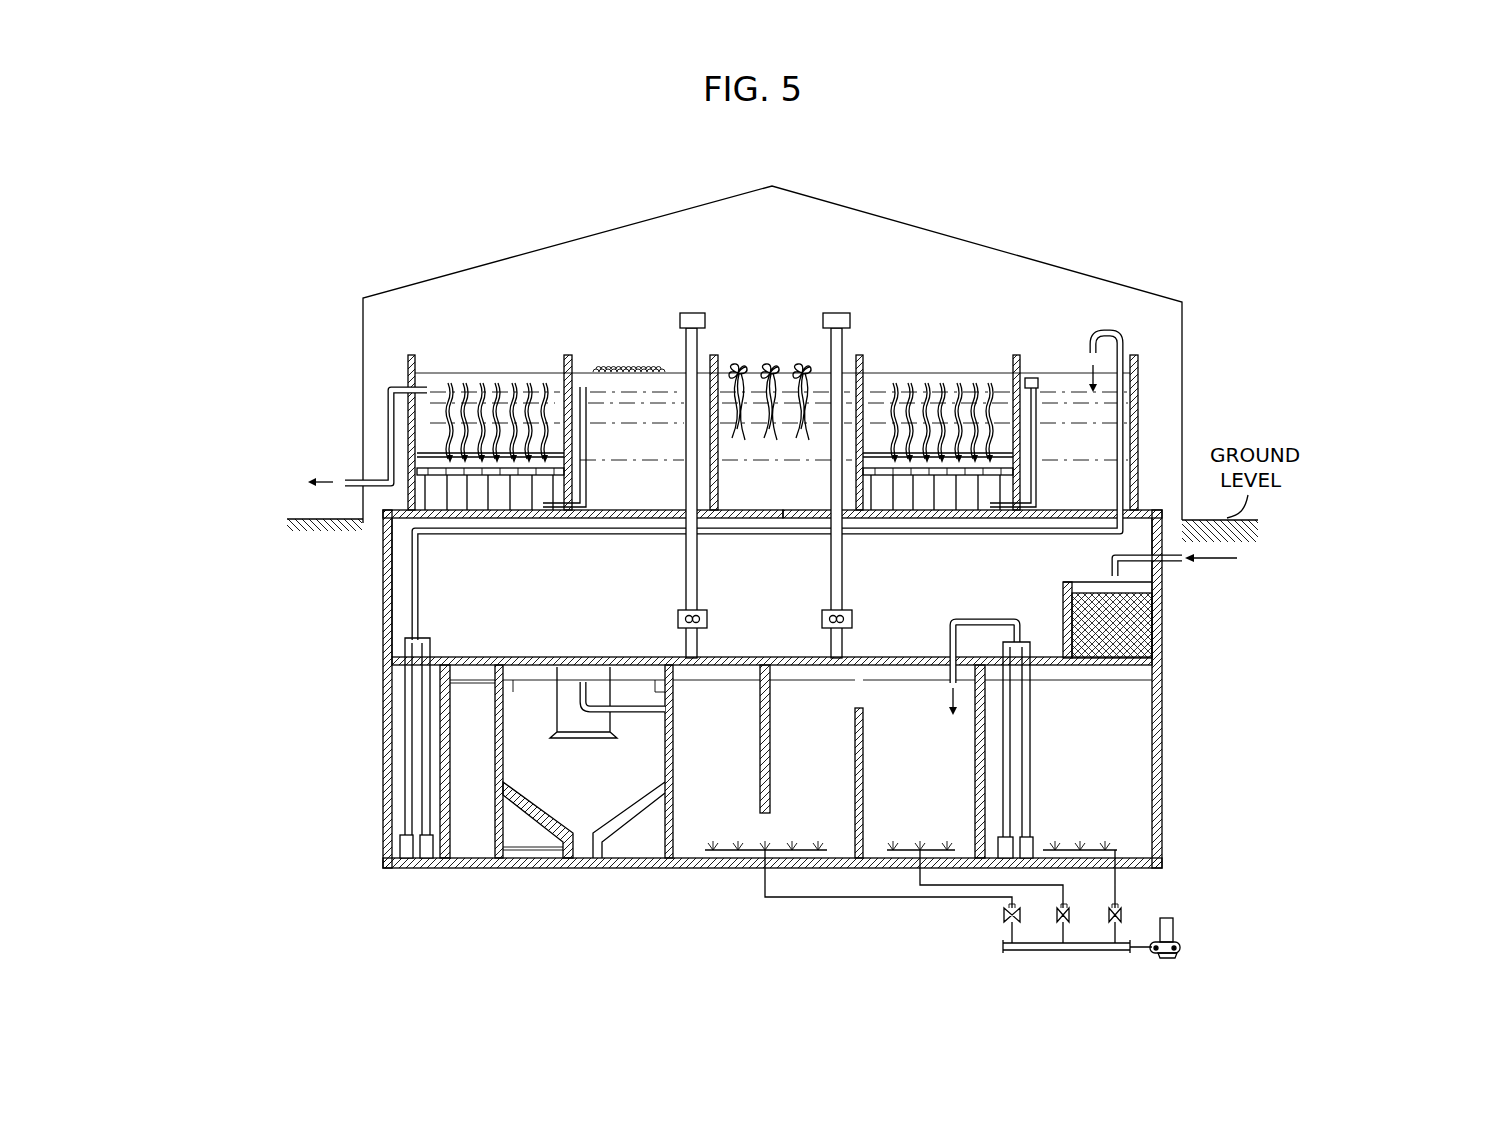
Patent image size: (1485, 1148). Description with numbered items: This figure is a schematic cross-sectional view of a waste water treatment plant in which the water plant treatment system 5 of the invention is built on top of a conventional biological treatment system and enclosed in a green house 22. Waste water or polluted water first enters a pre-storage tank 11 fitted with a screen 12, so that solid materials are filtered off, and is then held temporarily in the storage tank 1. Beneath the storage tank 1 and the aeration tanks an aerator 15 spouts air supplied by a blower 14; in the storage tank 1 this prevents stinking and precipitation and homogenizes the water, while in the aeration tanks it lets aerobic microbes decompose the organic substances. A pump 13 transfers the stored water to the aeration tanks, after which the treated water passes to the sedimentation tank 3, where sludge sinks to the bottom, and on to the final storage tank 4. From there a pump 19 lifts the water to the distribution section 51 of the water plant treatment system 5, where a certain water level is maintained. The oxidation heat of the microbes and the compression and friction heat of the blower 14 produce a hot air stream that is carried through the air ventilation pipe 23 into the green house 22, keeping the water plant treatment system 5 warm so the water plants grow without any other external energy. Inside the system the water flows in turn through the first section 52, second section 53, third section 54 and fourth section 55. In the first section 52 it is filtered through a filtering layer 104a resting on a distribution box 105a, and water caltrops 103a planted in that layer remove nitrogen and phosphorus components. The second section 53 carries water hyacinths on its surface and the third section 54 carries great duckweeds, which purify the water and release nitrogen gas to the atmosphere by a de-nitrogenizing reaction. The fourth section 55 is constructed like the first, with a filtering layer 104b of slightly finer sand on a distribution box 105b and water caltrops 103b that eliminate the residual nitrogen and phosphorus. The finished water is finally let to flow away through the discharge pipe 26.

The storage tank 1 is at (1143, 743).
The sedimentation tank 3 is at (598, 793).
The final storage tank 4 is at (443, 835).
The water plant treatment system 5 is at (773, 518).
The pre-storage tank 11 is at (1140, 585).
The screen 12 is at (1147, 638).
The pump 13 is at (1033, 847).
The blower 14 is at (1175, 933).
The aerator 15 is at (797, 846).
The pump 19 is at (402, 849).
The green house 22 is at (962, 238).
The air ventilation pipe 23 is at (833, 313).
The discharge pipe 26 is at (385, 418).
The distribution section 51 is at (1063, 383).
The first section 52 is at (918, 383).
The second section 53 is at (752, 378).
The third section 54 is at (645, 392).
The fourth section 55 is at (472, 383).
The water caltrops 103a is at (960, 383).
The water caltrops 103b is at (533, 383).
The filtering layer 104a is at (1000, 482).
The filtering layer 104b is at (548, 480).
The distribution box 105a is at (935, 518).
The distribution box 105b is at (483, 513).